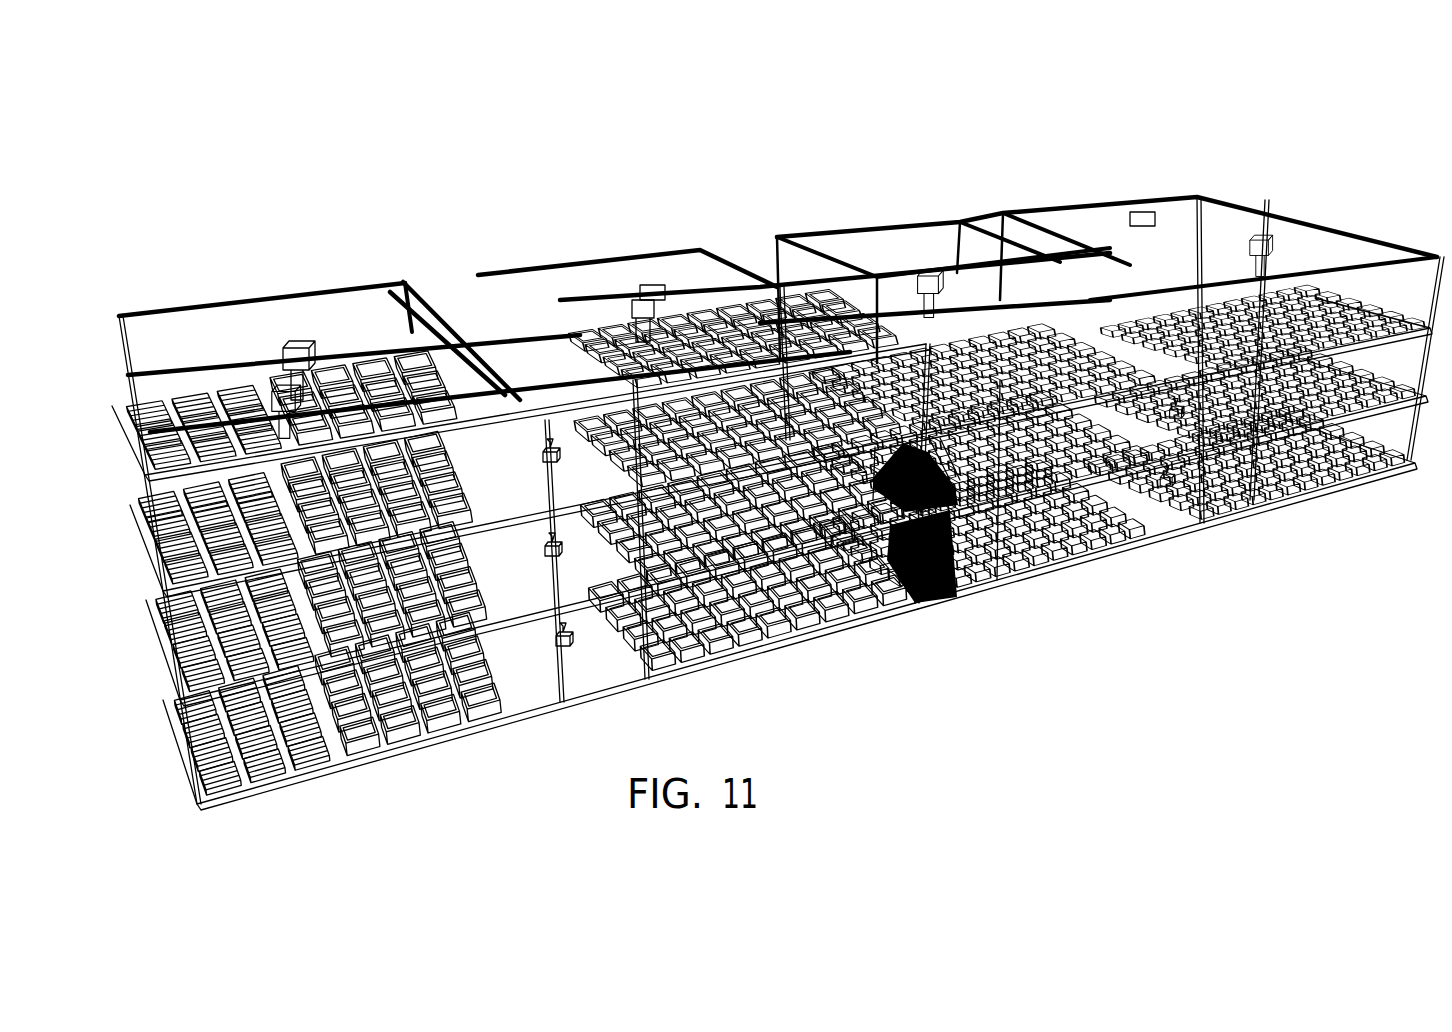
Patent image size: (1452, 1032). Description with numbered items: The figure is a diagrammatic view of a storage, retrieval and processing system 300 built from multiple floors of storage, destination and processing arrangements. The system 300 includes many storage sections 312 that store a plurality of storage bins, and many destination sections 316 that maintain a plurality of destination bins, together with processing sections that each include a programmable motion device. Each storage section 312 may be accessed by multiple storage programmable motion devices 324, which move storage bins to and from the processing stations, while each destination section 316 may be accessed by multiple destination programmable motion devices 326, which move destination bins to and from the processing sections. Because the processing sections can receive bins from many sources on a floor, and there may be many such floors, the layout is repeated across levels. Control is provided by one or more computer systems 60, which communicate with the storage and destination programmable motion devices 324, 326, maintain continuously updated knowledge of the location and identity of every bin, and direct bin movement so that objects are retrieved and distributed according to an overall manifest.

The system 300 is at (686, 89).
The storage section 312 is at (203, 394).
The destination section 316 is at (177, 552).
The storage programmable motion device 324 is at (292, 344).
The destination programmable motion device 326 is at (650, 284).
The computer system 60 is at (554, 458).